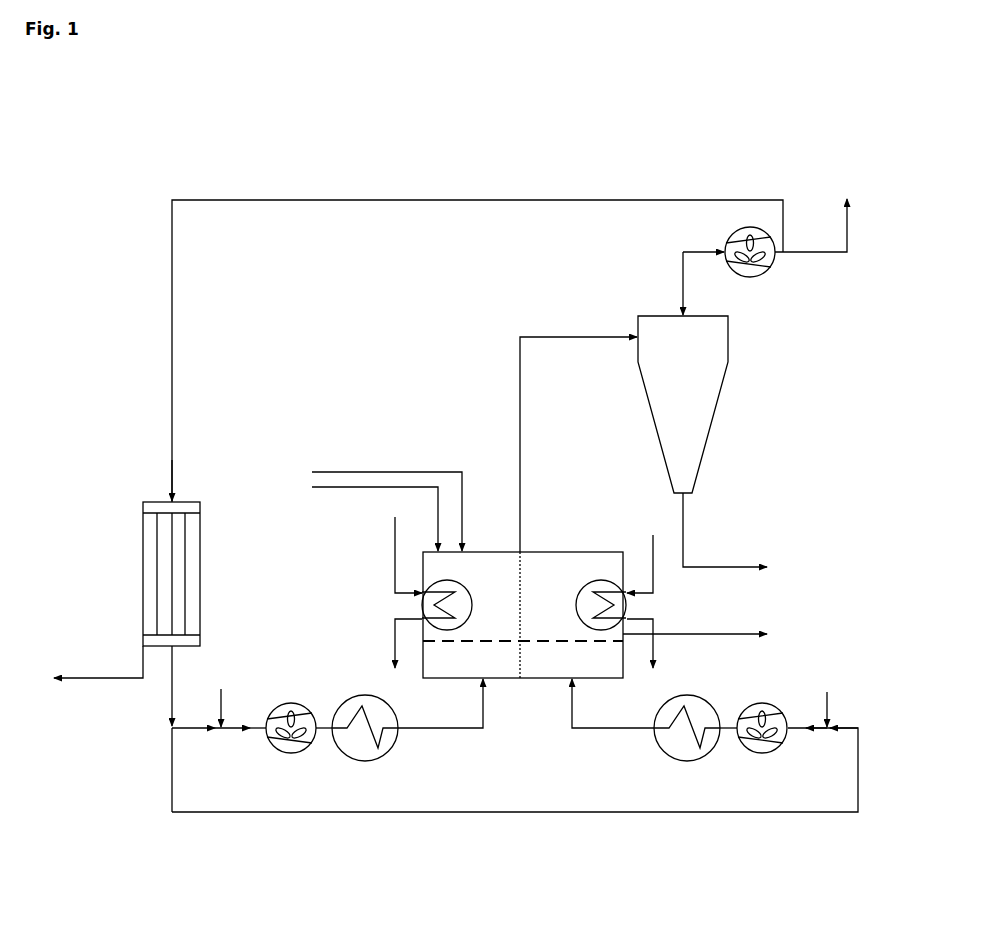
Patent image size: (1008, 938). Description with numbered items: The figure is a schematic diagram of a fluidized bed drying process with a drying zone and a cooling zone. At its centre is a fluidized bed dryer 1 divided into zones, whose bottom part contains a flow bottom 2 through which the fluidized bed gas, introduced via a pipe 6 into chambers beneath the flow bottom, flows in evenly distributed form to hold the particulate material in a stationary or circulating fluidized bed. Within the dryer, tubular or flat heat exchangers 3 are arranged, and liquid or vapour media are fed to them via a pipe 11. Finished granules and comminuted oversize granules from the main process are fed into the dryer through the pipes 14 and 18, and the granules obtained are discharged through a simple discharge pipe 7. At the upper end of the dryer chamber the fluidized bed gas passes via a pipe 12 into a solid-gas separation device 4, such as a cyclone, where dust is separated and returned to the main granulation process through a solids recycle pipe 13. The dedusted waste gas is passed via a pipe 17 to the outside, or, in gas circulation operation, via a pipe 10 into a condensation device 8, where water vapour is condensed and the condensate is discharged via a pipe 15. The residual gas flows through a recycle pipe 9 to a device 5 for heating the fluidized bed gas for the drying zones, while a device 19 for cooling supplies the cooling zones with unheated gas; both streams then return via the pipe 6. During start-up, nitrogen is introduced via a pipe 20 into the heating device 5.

The fluidized bed dryer 1 is at (519, 612).
The flow bottom 2 is at (578, 640).
The heat exchangers 3 is at (468, 590).
The solid-gas separation device 4 is at (680, 313).
The device for heating the fluidized bed gas 5 is at (351, 696).
The pipe 6 is at (475, 729).
The discharge pipe 7 is at (697, 637).
The condensation device 8 is at (141, 556).
The recycle pipe 9 is at (188, 729).
The pipe 10 is at (465, 200).
The pipe 11 is at (393, 559).
The pipe 12 is at (522, 416).
The solids recycle pipe 13 is at (730, 565).
The pipe 14 is at (362, 489).
The pipe 15 is at (100, 675).
The pipe 17 is at (807, 255).
The pipe 18 is at (362, 470).
The device for cooling the fluidized bed gas 19 is at (706, 753).
The pipe 20 is at (223, 707).